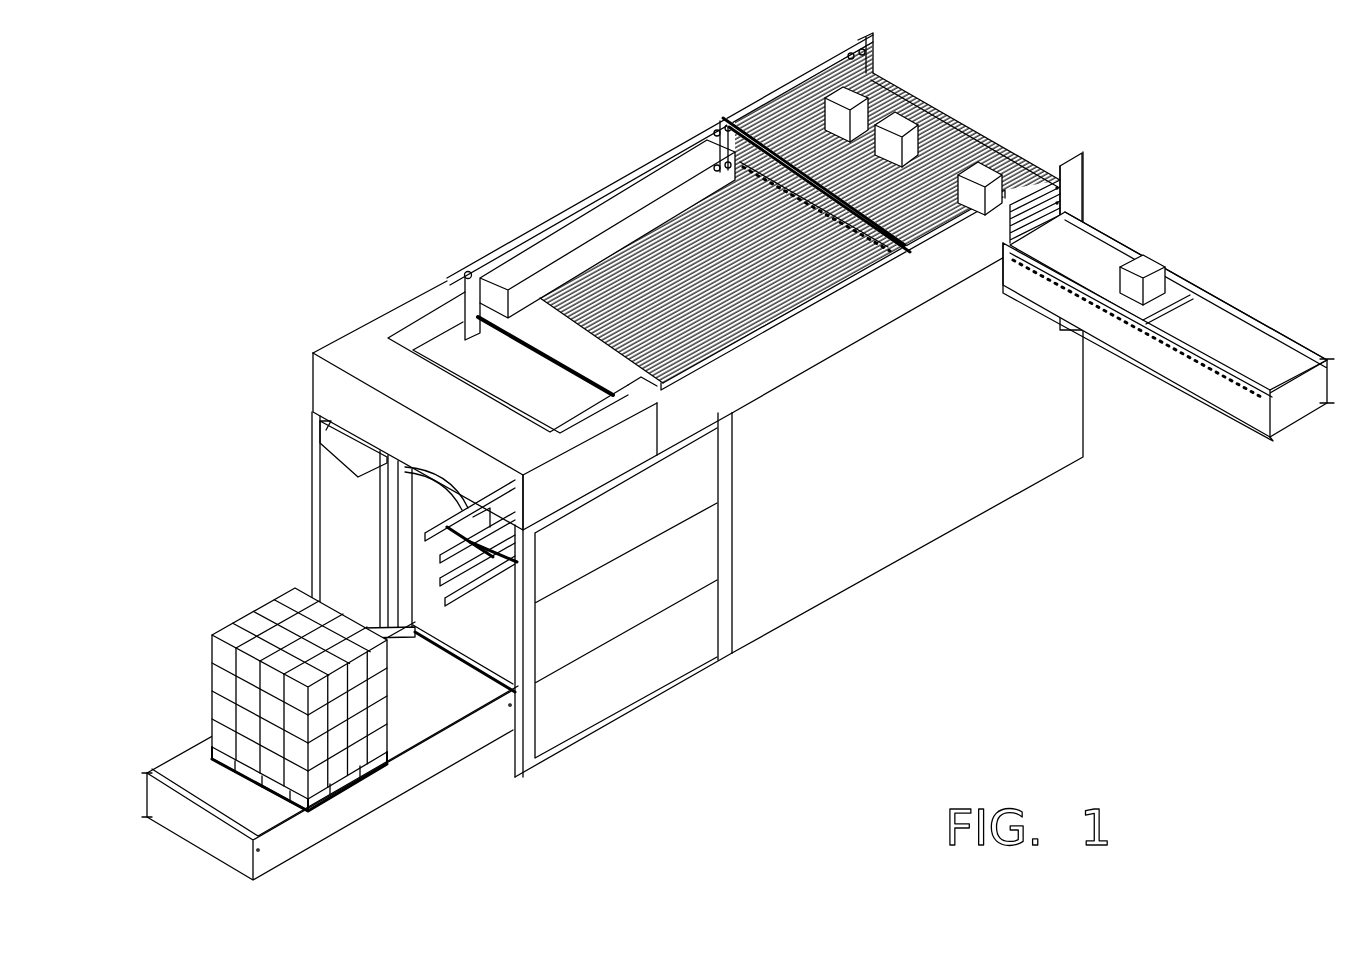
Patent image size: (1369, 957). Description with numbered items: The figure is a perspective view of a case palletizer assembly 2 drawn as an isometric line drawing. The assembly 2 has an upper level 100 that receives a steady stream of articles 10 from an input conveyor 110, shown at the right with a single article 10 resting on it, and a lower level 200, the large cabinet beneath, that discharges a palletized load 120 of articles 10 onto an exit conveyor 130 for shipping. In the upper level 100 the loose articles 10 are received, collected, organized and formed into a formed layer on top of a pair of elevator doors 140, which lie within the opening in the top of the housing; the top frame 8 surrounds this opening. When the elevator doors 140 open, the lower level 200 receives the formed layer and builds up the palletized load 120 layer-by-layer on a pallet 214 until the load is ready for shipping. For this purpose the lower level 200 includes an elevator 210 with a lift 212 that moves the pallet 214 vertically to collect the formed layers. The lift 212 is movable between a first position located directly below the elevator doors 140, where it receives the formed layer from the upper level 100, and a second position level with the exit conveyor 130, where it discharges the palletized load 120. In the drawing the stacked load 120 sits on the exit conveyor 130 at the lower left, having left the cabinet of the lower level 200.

The case palletizer assembly 2 is at (1060, 105).
The housing top frame 8 is at (428, 277).
The articles 10 is at (1143, 263).
The upper level 100 is at (472, 243).
The input conveyor 110 is at (1237, 298).
The palletized load 120 is at (230, 612).
The exit conveyor 130 is at (387, 803).
The elevator doors 140 is at (510, 375).
The lower level 200 is at (1047, 498).
The elevator 210 is at (427, 522).
The lift 212 is at (480, 593).
The pallet 214 is at (470, 543).